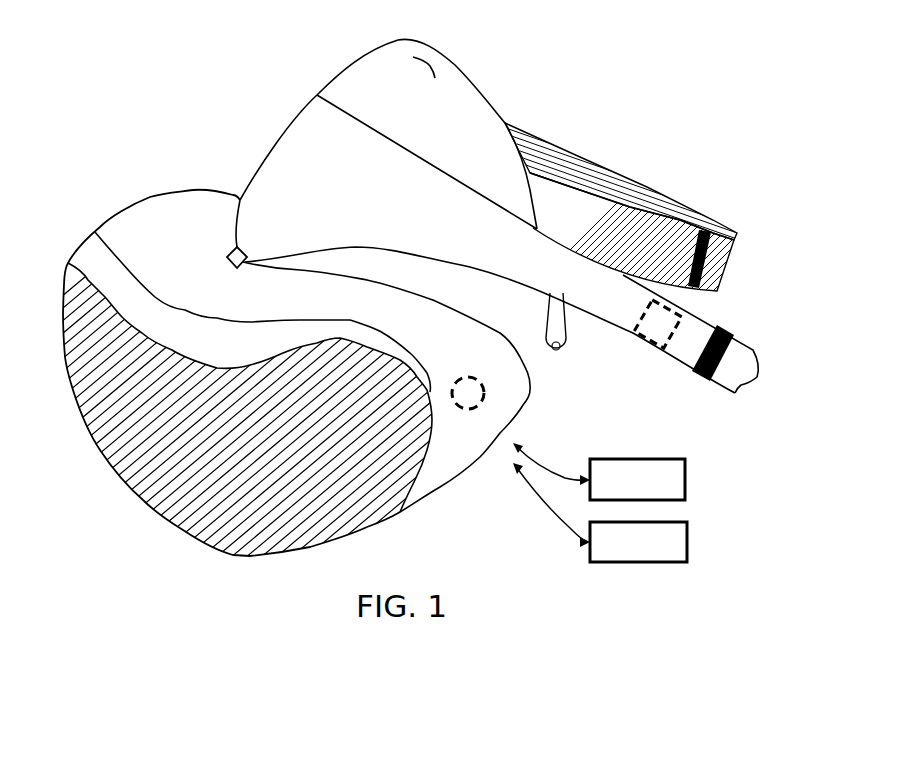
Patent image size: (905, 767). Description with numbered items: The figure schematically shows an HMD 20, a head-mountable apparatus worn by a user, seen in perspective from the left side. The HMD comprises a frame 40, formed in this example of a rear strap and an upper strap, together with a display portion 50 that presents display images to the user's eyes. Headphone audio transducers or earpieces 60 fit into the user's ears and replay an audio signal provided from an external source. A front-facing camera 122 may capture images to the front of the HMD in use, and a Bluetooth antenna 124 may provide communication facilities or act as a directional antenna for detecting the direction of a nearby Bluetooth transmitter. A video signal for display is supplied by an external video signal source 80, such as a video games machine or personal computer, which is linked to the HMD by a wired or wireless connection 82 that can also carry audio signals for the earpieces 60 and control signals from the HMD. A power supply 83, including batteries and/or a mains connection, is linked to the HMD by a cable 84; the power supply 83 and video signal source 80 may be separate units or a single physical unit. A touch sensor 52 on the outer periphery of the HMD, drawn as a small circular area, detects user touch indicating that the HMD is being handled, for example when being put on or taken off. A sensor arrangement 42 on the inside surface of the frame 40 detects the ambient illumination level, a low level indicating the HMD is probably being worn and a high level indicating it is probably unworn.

The HMD 20 is at (235, 96).
The Bluetooth antenna 124 is at (437, 56).
The front-facing camera 122 is at (233, 250).
The display portion 50 is at (117, 229).
The touch sensor 52 is at (485, 389).
The earpieces 60 is at (567, 348).
The frame 40 is at (757, 363).
The sensor arrangement 42 is at (664, 311).
The external video signal source 80 is at (688, 480).
The power supply 83 is at (688, 543).
The wired or wireless connection 82 is at (543, 464).
The cable 84 is at (543, 508).